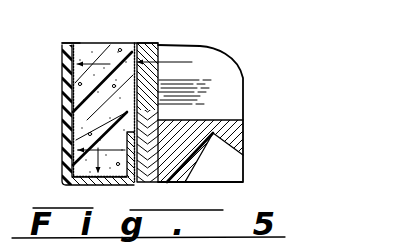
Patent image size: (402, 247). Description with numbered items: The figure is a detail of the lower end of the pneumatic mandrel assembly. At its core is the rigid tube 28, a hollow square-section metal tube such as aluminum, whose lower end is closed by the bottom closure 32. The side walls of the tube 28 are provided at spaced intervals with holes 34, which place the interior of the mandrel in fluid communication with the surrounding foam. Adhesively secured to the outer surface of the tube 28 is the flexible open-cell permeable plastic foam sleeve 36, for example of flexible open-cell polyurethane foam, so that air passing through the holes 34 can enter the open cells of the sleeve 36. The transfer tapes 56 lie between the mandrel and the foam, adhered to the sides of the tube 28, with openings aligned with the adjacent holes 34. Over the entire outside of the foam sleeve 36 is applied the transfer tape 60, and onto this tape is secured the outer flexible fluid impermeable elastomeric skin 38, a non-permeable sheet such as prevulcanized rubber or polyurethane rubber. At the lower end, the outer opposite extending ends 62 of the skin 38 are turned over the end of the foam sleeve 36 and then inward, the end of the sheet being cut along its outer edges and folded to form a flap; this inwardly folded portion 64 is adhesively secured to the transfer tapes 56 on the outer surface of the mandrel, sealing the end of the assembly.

The rigid tube 28 is at (228, 100).
The bottom closure 32 is at (228, 130).
The holes 34 is at (160, 46).
The flexible open-cell permeable plastic foam sleeve 36 is at (85, 117).
The outer flexible fluid impermeable elastomeric skin 38 is at (62, 80).
The transfer tapes 56 is at (130, 78).
The transfer tape 60 is at (72, 33).
The outer opposite extending ends of the flexible skin 62 is at (85, 184).
The inwardly folded portion 64 is at (141, 183).